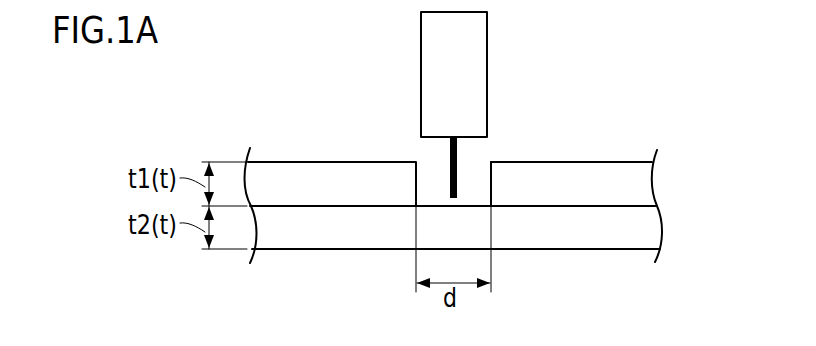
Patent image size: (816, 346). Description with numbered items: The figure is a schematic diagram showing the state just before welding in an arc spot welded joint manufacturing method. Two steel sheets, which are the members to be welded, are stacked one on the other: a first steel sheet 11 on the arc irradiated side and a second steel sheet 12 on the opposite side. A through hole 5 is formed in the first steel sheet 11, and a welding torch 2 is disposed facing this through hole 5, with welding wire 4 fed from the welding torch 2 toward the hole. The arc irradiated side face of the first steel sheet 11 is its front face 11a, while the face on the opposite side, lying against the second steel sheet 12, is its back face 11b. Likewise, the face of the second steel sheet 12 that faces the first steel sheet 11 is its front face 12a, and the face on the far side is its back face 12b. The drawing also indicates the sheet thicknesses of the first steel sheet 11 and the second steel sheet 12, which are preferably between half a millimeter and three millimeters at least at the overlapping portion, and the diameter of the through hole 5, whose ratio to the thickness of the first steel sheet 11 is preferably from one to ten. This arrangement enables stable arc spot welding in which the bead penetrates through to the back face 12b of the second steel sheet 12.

The welding torch 2 is at (487, 39).
The welding wire 4 is at (450, 151).
The through hole 5 is at (490, 170).
The first steel sheet 11 is at (630, 182).
The front face 11a is at (270, 160).
The back face 11b is at (271, 208).
The second steel sheet 12 is at (635, 230).
The front face 12a is at (317, 205).
The back face 12b is at (322, 251).